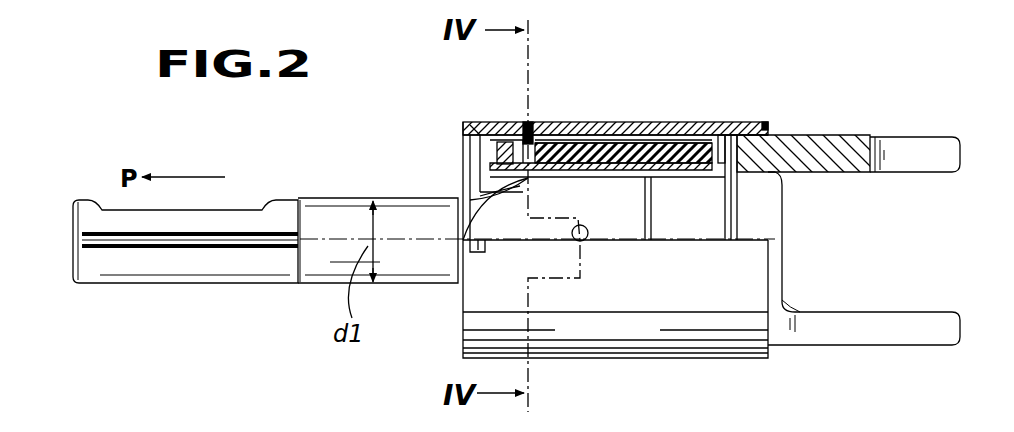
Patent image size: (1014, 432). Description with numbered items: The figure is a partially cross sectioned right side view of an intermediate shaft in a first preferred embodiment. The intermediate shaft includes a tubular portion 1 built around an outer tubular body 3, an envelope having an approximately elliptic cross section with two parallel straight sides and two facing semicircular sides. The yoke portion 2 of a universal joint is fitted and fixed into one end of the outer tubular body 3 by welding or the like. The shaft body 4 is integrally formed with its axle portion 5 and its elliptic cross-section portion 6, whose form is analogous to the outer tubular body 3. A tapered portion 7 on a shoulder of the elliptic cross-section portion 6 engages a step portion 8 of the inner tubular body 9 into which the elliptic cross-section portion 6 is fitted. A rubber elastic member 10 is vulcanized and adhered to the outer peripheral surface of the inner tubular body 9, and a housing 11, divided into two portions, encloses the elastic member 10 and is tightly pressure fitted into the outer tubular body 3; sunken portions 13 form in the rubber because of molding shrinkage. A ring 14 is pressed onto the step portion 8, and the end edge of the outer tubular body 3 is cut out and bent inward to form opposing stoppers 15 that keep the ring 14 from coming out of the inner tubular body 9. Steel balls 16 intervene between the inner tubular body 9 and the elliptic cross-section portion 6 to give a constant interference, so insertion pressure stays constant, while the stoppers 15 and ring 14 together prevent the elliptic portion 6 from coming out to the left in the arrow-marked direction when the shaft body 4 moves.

The tubular portion 1 is at (687, 118).
The yoke portion 2 is at (832, 142).
The outer tubular body 3 is at (668, 122).
The shaft body 4 is at (346, 192).
The axle portion 5 is at (208, 287).
The elliptic cross-section portion 6 is at (650, 198).
The tapered portion 7 is at (516, 187).
The step portion 8 is at (522, 180).
The inner tubular body 9 is at (630, 172).
The elastic member 10 is at (702, 135).
The housing 11 is at (561, 135).
The sunken portions 13 is at (526, 125).
The ring 14 is at (497, 154).
The stoppers 15 is at (475, 125).
The steel balls 16 is at (588, 242).